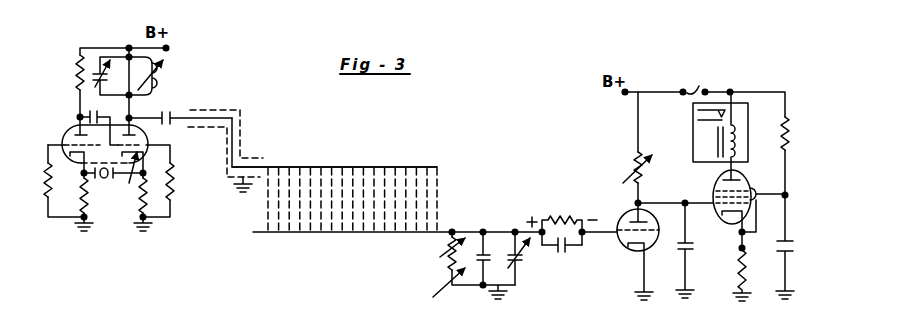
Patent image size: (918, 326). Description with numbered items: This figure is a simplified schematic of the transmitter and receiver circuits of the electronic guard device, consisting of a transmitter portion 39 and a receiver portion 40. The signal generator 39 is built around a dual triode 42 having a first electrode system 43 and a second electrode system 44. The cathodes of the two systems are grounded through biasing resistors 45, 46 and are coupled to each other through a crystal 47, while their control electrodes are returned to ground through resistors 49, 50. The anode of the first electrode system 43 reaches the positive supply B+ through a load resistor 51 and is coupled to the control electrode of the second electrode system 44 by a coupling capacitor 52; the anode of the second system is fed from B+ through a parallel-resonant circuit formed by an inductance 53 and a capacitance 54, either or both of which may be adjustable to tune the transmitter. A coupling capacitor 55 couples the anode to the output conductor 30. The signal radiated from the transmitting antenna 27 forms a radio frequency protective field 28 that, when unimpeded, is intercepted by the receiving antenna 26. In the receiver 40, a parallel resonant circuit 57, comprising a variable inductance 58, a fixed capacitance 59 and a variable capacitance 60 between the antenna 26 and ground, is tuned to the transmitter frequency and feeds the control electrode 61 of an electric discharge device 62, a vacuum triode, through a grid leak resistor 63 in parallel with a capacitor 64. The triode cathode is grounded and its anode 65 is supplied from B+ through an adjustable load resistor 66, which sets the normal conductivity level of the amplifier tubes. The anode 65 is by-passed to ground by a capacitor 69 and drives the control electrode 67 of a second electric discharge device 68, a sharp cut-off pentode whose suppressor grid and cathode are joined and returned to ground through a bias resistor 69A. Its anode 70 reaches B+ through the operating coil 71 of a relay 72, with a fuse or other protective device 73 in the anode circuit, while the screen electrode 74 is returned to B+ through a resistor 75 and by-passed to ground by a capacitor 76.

The receiving antenna 26 is at (372, 233).
The transmitting antenna 27 is at (337, 167).
The radio frequency protective field 28 is at (365, 190).
The output conductor 30 is at (233, 127).
The transmitter portion 39 is at (210, 83).
The receiver portion 40 is at (593, 110).
The dual triode 42 is at (152, 135).
The first electrode system 43 is at (68, 143).
The second electrode system 44 is at (125, 176).
The biasing resistor 45 is at (82, 193).
The biasing resistor 46 is at (148, 198).
The crystal 47 is at (106, 178).
The resistor 49 is at (45, 198).
The resistor 50 is at (174, 187).
The load resistor 51 is at (78, 62).
The coupling capacitor 52 is at (88, 112).
The inductance 53 is at (157, 83).
The capacitance 54 is at (99, 73).
The coupling capacitor 55 is at (170, 112).
The parallel resonant circuit 57 is at (440, 276).
The variable inductance 58 is at (431, 256).
The fixed capacitance 59 is at (480, 261).
The variable capacitance 60 is at (518, 263).
The control electrode 61 is at (623, 243).
The electric discharge device 62 is at (623, 211).
The grid leak resistor 63 is at (553, 219).
The capacitor 64 is at (567, 251).
The anode 65 is at (647, 222).
The load resistor 66 is at (635, 163).
The control electrode 67 is at (718, 204).
The second electric discharge device 68 is at (725, 178).
The capacitor 69 is at (683, 250).
The bias resistor 69A is at (738, 276).
The anode 70 is at (714, 178).
The operating coil 71 is at (736, 128).
The relay 72 is at (693, 140).
The fuse or other protective device 73 is at (699, 86).
The screen electrode 74 is at (744, 195).
The resistor 75 is at (784, 151).
The capacitor 76 is at (781, 252).